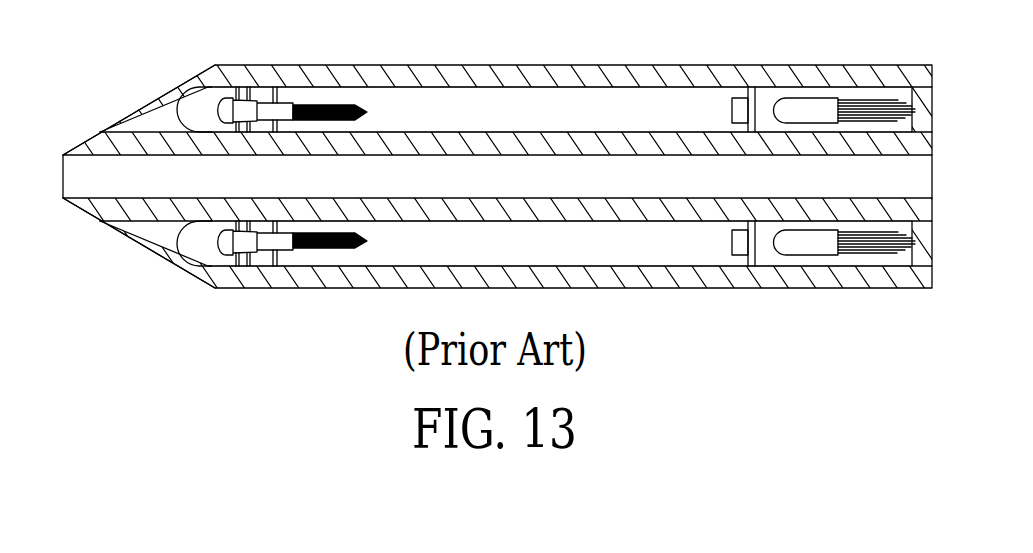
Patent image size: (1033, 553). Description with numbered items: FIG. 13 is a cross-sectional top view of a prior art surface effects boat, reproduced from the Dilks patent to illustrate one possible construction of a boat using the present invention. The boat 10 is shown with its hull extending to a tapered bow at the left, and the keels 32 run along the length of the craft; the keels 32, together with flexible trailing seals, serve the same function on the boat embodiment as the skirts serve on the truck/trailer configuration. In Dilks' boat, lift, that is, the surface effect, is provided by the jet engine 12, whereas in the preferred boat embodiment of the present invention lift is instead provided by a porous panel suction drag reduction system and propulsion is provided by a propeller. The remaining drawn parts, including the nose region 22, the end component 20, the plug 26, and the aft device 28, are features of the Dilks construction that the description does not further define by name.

The prior art dual writing instrument 10 is at (383, 65).
The jet engine 12 is at (273, 240).
The cartridge end cap 20 is at (207, 235).
The tapered nose 22 is at (148, 235).
The end plug 26 is at (768, 227).
The brush applicator 28 is at (815, 237).
The keels 32 is at (509, 101).